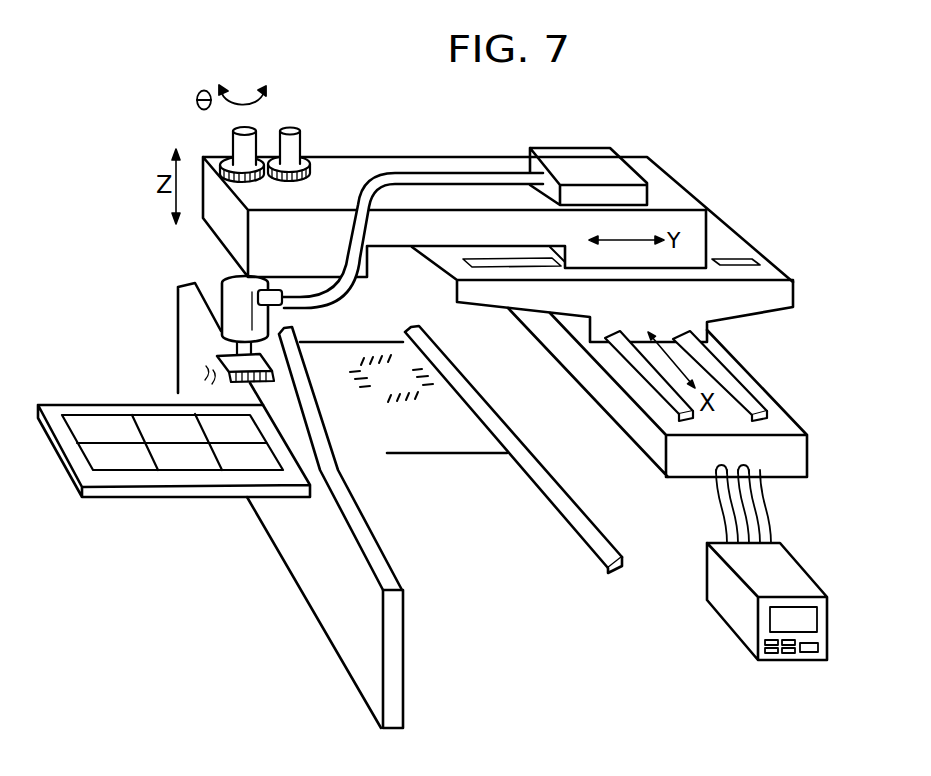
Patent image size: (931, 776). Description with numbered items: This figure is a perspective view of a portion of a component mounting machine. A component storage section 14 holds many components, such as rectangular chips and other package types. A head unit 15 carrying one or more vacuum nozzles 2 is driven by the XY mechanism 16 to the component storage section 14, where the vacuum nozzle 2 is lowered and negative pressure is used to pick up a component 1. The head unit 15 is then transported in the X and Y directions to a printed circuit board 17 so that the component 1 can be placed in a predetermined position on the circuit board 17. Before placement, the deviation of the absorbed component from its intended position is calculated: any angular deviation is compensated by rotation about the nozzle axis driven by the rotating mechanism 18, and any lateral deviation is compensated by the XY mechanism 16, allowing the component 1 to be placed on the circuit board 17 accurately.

The component 1 is at (216, 366).
The vacuum nozzle 2 is at (229, 350).
The component storage section 14 is at (184, 490).
The head unit 15 is at (226, 276).
The XY mechanism 16 is at (770, 250).
The printed circuit board 17 is at (447, 452).
The rotating mechanism 18 is at (292, 121).